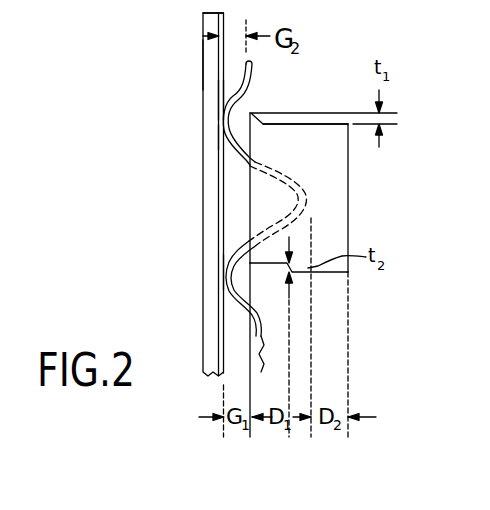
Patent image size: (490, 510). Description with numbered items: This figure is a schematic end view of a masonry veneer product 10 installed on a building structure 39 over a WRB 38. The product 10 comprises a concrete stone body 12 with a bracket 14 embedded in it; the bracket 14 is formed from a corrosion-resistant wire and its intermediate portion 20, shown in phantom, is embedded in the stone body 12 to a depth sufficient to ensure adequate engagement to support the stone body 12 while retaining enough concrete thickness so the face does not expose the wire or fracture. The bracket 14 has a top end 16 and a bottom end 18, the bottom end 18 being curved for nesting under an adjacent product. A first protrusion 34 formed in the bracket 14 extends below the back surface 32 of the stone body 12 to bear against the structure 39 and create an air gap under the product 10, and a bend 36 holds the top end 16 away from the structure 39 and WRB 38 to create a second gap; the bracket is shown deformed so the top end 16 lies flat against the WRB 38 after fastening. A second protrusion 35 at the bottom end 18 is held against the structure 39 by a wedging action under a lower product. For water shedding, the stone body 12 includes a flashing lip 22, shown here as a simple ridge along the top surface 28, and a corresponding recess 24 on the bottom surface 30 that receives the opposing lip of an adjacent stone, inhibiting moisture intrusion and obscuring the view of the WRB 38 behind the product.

The masonry veneer product 10 is at (405, 241).
The stone body 12 is at (346, 166).
The bracket 14 is at (284, 338).
The top end 16 is at (271, 72).
The bottom end 18 is at (272, 368).
The intermediate portion 20 is at (308, 194).
The flashing lip 22 is at (311, 220).
The recess 24 is at (275, 337).
The top surface 28 is at (312, 120).
The bottom surface 30 is at (336, 276).
The back surface 32 is at (235, 200).
The first protrusion 34 is at (206, 138).
The second protrusion 35 is at (206, 275).
The bend 36 is at (228, 97).
The WRB 38 is at (231, 26).
The structure 39 is at (211, 59).